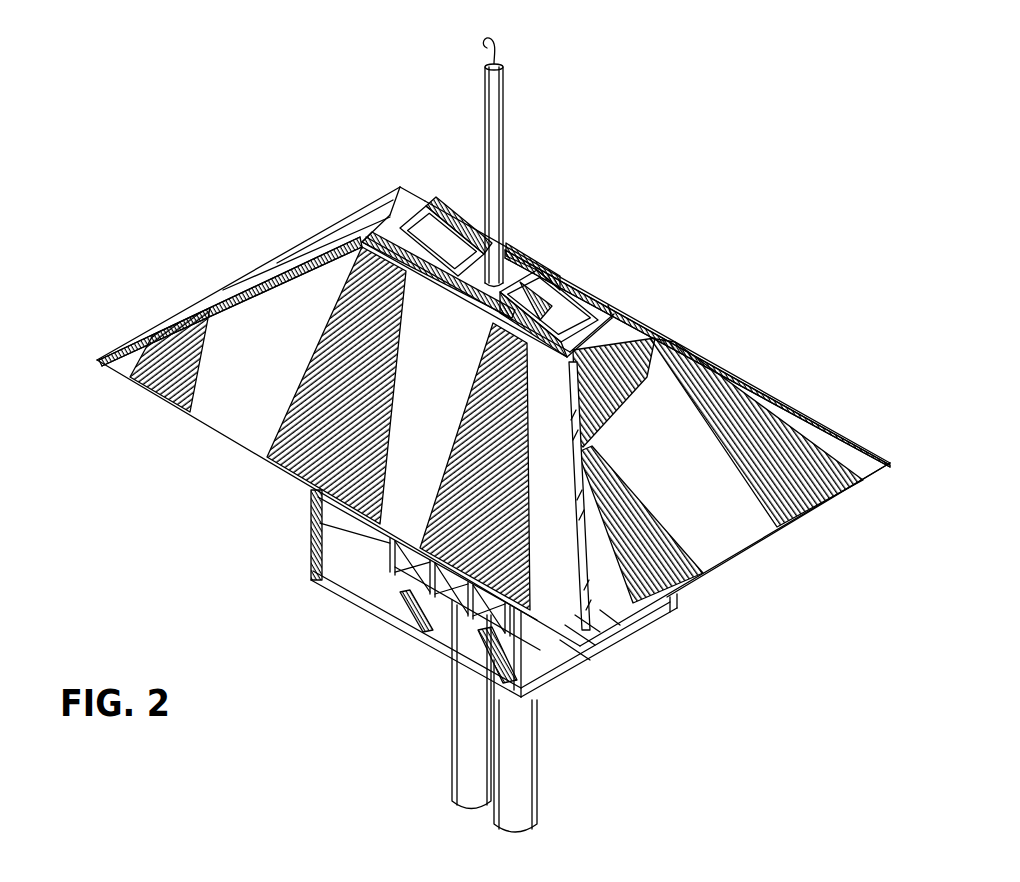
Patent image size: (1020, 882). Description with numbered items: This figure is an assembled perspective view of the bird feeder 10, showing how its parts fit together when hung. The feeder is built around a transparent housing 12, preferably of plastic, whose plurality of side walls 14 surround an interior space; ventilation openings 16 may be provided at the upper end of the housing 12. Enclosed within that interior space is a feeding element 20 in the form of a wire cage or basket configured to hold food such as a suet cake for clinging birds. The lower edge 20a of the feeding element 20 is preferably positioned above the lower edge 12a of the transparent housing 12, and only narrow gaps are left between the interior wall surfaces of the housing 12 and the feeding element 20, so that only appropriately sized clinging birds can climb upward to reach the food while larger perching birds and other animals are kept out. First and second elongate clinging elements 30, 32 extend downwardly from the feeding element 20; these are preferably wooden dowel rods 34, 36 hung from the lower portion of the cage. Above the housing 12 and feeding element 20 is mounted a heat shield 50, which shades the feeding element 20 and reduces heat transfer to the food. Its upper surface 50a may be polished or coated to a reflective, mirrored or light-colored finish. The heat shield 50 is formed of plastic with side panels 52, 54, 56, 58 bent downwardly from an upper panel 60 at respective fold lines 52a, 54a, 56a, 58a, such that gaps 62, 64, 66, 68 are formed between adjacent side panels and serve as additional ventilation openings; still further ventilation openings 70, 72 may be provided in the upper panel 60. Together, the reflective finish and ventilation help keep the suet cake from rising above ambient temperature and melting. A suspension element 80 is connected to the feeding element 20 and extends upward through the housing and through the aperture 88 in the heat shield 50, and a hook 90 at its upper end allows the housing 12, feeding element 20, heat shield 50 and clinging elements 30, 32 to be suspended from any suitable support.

The bird feeder 10 is at (165, 150).
The transparent housing 12 is at (627, 647).
The lower edge of the transparent housing 12a is at (598, 655).
The side walls 14 is at (330, 547).
The ventilation openings 16 is at (563, 320).
The feeding element 20 is at (385, 548).
The lower edge of the feeding element 20a is at (413, 570).
The first elongate clinging element 30 is at (452, 745).
The second elongate clinging element 32 is at (538, 776).
The wooden dowel rod 34 is at (470, 698).
The wooden dowel rod 36 is at (520, 730).
The heat shield 50 is at (817, 410).
The upper surface of the heat shield 50a is at (452, 425).
The side panel 52 is at (250, 400).
The fold line 52a is at (480, 314).
The side panel 54 is at (226, 282).
The fold line 54a is at (397, 212).
The side panel 56 is at (612, 298).
The fold line 56a is at (543, 307).
The side panel 58 is at (720, 528).
The fold line 58a is at (580, 363).
The upper panel 60 is at (612, 326).
The gap 62 is at (143, 340).
The gap 64 is at (410, 196).
The gap 66 is at (737, 383).
The gap 68 is at (575, 482).
The ventilation opening 70 is at (432, 248).
The ventilation opening 72 is at (560, 316).
The suspension element 80 is at (505, 150).
The aperture 88 is at (500, 250).
The hook 90 is at (500, 46).